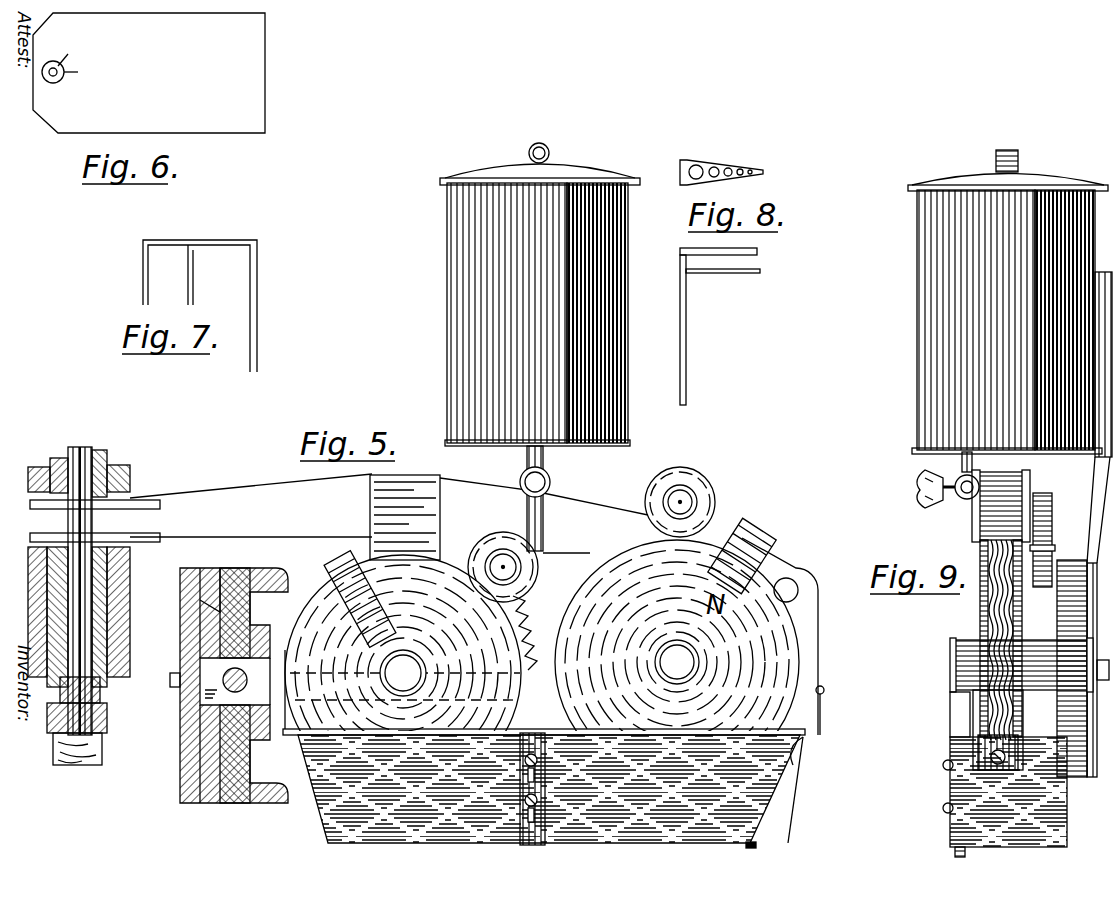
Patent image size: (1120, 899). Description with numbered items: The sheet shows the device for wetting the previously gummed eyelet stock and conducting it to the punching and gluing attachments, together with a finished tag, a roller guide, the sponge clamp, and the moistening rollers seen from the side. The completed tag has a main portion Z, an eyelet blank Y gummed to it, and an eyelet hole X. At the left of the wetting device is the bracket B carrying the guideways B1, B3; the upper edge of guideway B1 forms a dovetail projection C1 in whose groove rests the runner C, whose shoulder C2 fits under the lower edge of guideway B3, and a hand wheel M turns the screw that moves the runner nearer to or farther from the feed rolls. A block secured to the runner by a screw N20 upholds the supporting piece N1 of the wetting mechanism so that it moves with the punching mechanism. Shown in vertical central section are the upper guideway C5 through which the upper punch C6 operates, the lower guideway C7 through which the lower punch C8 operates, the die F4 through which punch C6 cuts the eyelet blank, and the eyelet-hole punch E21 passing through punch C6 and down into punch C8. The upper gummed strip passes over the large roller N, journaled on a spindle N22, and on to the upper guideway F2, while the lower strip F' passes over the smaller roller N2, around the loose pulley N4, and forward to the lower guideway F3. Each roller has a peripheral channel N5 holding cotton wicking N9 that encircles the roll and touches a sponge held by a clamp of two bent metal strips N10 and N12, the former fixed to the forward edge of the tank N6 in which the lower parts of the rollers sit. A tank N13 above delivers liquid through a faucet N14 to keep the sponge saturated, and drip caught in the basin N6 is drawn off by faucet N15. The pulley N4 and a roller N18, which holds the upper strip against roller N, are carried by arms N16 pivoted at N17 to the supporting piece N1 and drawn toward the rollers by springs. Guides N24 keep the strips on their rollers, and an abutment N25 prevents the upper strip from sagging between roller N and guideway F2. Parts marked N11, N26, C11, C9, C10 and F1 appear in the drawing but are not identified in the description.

In FIG. 5, the tank N13 is at (540, 294).
In FIG. 9, the tank N13 is at (1010, 356).
In FIG. 5, the faucet N14 is at (550, 490).
In FIG. 9, the faucet N14 is at (957, 505).
In FIG. 5, the guide or abutment N25 is at (390, 505).
In FIG. 5, the guide N24 is at (340, 578).
In FIG. 7, the guide N24 is at (200, 306).
In FIG. 5, the peripheral channel N5 is at (335, 600).
In FIG. 5, the loose pulley or sheave N4 is at (503, 550).
In FIG. 5, the roller N18 is at (660, 500).
In FIG. 9, the roller N18 is at (1015, 484).
In FIG. 5, the arm N16 is at (714, 540).
In FIG. 9, the arm N16 is at (1045, 530).
In FIG. 5, the pivot N17 is at (790, 580).
In FIG. 9, the pivot N17 is at (1036, 592).
In FIG. 5, the supporting piece N1 is at (573, 590).
In FIG. 9, the supporting piece N1 is at (1075, 620).
In FIG. 5, the cotton wicking N9 is at (403, 673).
In FIG. 5, the pin or spindle N22 is at (677, 662).
In FIG. 9, the pin or spindle N22 is at (955, 668).
In FIG. 5, the roller N2 is at (492, 615).
In FIG. 5, the spring N11 is at (545, 575).
In FIG. 5, the latch lever N26 is at (823, 700).
In FIG. 9, the latch lever N26 is at (1020, 713).
In FIG. 5, the tank or catch basin N6 is at (549, 789).
In FIG. 9, the tank or catch basin N6 is at (1058, 808).
In FIG. 5, the clamp strip N12 is at (540, 744).
In FIG. 8, the clamp strip N12 is at (763, 172).
In FIG. 9, the clamp strip N12 is at (952, 708).
In FIG. 5, the faucet N15 is at (766, 832).
In FIG. 9, the faucet N15 is at (956, 850).
In FIG. 5, the clamp strip N10 is at (213, 667).
In FIG. 8, the clamp strip N10 is at (703, 273).
In FIG. 9, the clamp strip N10 is at (950, 788).
In FIG. 5, the screw N20 is at (172, 678).
In FIG. 9, the roller N is at (985, 592).
In FIG. 5, the hand wheel M is at (240, 676).
In FIG. 5, the bracket B is at (255, 570).
In FIG. 5, the guideway B1 is at (235, 620).
In FIG. 5, the guideway B3 is at (230, 730).
In FIG. 5, the runner C is at (180, 700).
In FIG. 5, the dovetail projection C1 is at (205, 624).
In FIG. 5, the shoulder C2 is at (210, 765).
In FIG. 5, the casing top wall C11 is at (190, 582).
In FIG. 5, the guideway C5 is at (45, 458).
In FIG. 5, the punch C6 is at (100, 452).
In FIG. 5, the guideway C7 is at (30, 588).
In FIG. 5, the punch C8 is at (62, 692).
In FIG. 5, the lower nut C9 is at (50, 718).
In FIG. 5, the end cap C10 is at (58, 750).
In FIG. 5, the eyelet-hole punch E21 is at (80, 433).
In FIG. 5, the die F4 is at (45, 504).
In FIG. 5, the upper guideway F2 is at (150, 496).
In FIG. 5, the lower guideway F3 is at (160, 537).
In FIG. 5, the frame rail F1 is at (290, 790).
In FIG. 5, the lower strip of paper F' is at (808, 835).
In FIG. 6, the eyelet hole X is at (68, 48).
In FIG. 6, the eyelet blank Y is at (69, 73).
In FIG. 6, the main portion of the tag Z is at (149, 73).